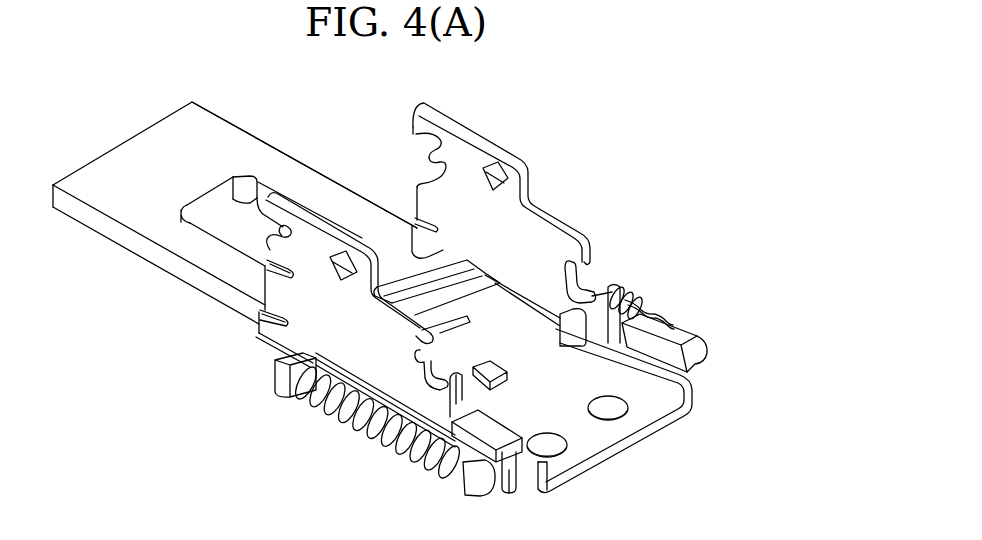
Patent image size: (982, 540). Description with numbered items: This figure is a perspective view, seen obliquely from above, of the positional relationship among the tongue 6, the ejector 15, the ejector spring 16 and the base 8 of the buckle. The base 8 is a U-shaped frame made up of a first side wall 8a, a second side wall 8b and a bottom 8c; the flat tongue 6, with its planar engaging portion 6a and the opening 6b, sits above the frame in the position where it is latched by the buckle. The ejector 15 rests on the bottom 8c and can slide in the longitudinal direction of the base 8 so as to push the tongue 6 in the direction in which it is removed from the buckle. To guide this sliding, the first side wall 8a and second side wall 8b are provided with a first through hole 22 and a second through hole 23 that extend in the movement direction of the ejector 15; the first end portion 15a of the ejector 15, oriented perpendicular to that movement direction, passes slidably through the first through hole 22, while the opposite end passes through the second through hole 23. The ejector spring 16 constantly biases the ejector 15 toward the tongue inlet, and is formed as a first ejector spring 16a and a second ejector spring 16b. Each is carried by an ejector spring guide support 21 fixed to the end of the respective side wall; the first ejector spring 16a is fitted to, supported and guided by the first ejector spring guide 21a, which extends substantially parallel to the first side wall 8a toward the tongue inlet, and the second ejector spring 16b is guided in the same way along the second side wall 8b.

The tongue 6 is at (75, 226).
The planar engaging portion 6a is at (240, 127).
The notch of plate 6b is at (203, 208).
The base 8 is at (448, 315).
The first side wall 8a is at (276, 290).
The second side wall 8b is at (478, 148).
The bottom 8c is at (625, 443).
The ejector 15 is at (457, 297).
The first end portion 15a is at (282, 376).
The ejector spring 16 is at (361, 451).
The first ejector spring 16a is at (418, 466).
The second ejector spring 16b is at (663, 312).
The ejector spring guide support 21 is at (490, 425).
The first ejector spring guide 21a is at (343, 406).
The first through hole 22 is at (357, 377).
The second through hole 23 is at (553, 324).